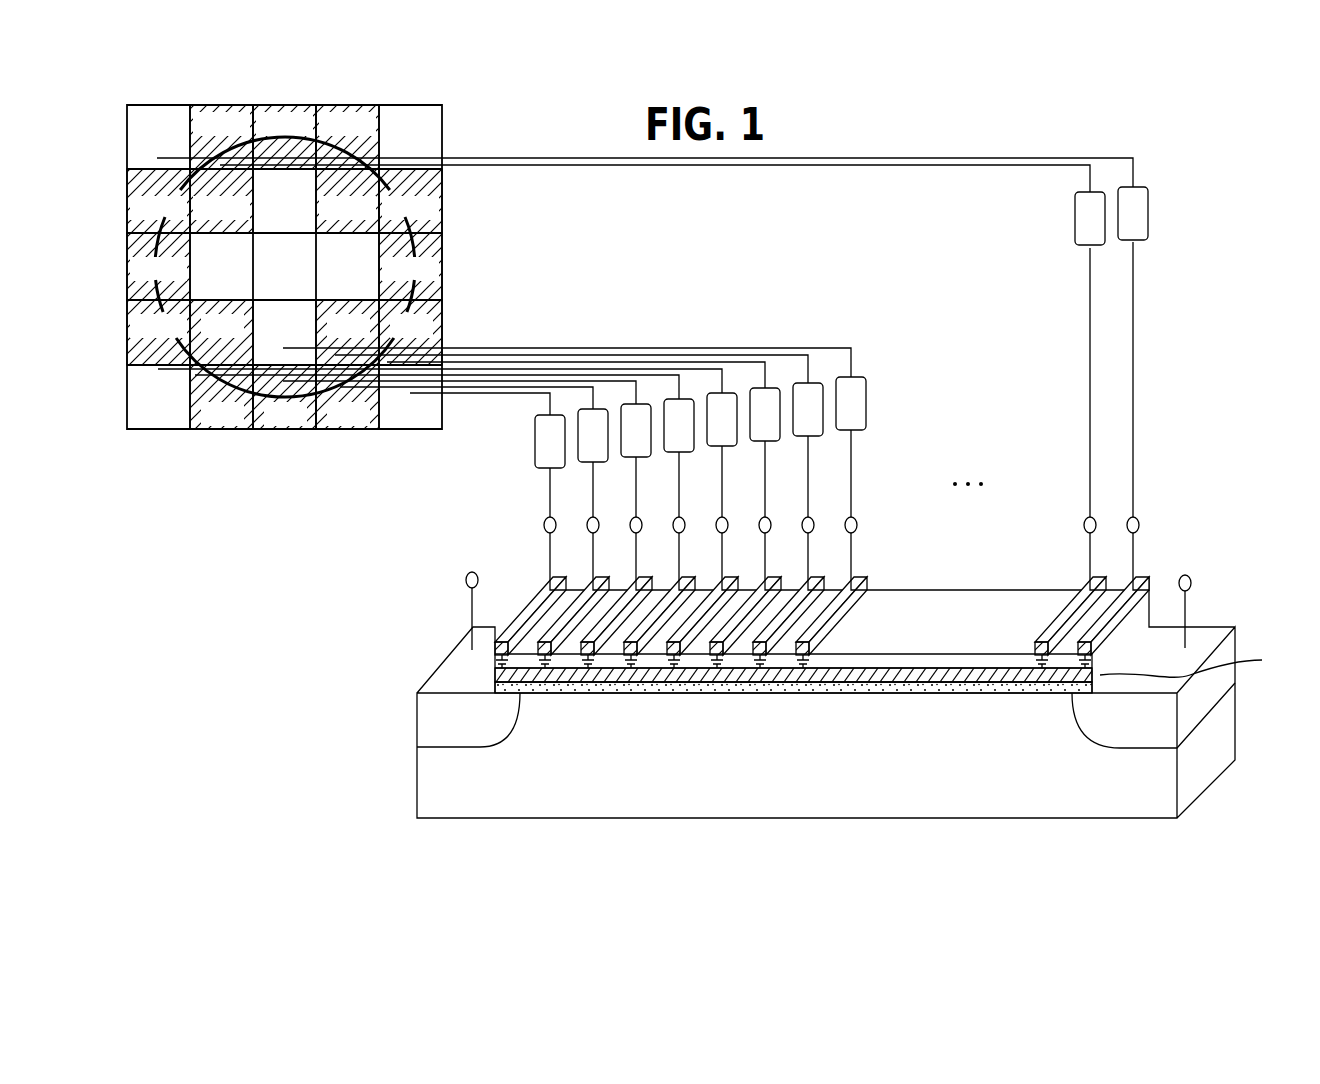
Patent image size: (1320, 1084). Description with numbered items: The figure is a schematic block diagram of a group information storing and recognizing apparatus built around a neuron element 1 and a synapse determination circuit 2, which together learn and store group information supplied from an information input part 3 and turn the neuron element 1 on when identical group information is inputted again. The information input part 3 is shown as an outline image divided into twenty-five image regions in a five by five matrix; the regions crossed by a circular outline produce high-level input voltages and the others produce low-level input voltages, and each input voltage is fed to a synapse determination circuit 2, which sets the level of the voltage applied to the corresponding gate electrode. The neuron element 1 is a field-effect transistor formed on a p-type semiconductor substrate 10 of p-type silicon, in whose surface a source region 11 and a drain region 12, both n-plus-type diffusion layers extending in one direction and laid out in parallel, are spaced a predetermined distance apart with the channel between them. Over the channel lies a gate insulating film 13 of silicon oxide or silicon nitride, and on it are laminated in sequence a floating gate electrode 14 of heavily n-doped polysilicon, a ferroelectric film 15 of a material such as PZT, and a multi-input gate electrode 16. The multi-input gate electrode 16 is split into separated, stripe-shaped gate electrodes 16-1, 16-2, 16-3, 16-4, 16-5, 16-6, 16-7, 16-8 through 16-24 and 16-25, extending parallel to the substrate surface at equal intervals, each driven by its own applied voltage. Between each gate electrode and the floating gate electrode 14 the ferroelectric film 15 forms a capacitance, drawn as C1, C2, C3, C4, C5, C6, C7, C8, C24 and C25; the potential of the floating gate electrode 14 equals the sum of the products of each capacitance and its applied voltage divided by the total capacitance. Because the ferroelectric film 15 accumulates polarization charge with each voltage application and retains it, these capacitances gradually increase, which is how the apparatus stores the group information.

The neuron element 1 is at (408, 698).
The synapse determination circuit 2 is at (1150, 212).
The information input part 3 is at (126, 128).
The p-type semiconductor substrate 10 is at (1150, 795).
The source region 11 is at (428, 734).
The drain region 12 is at (1170, 730).
The gate insulating film 13 is at (940, 690).
The floating gate electrode 14 is at (967, 686).
The ferroelectric film 15 is at (1000, 667).
The multi-input gate electrode 16 is at (1162, 577).
The gate electrode 16-1 is at (495, 655).
The gate electrode 16-2 is at (538, 655).
The gate electrode 16-3 is at (581, 655).
The gate electrode 16-4 is at (624, 655).
The gate electrode 16-5 is at (667, 655).
The gate electrode 16-6 is at (710, 655).
The gate electrode 16-7 is at (753, 655).
The gate electrode 16-8 is at (796, 655).
The gate electrode 16-24 is at (1035, 655).
The gate electrode 16-25 is at (1078, 656).
The capacitance C1 is at (515, 656).
The capacitance C2 is at (558, 656).
The capacitance C3 is at (601, 656).
The capacitance C4 is at (644, 656).
The capacitance C5 is at (687, 656).
The capacitance C6 is at (730, 656).
The capacitance C7 is at (773, 656).
The capacitance C8 is at (816, 656).
The capacitance C24 is at (1055, 656).
The capacitance C25 is at (1098, 656).